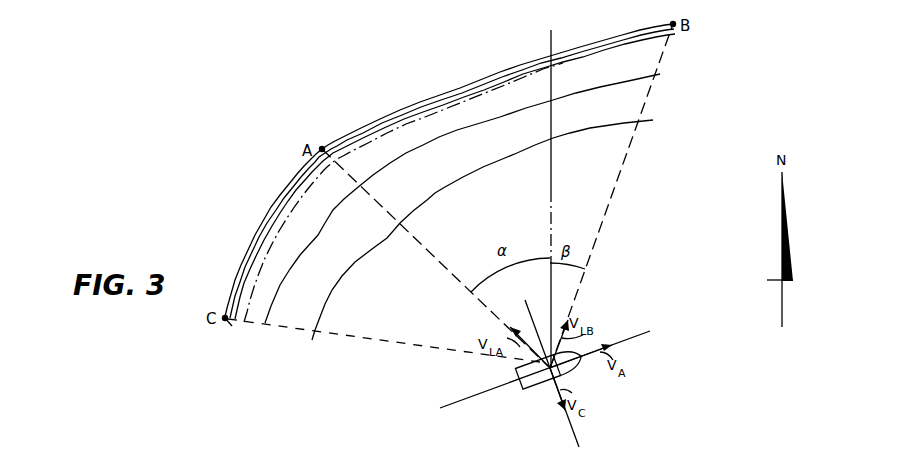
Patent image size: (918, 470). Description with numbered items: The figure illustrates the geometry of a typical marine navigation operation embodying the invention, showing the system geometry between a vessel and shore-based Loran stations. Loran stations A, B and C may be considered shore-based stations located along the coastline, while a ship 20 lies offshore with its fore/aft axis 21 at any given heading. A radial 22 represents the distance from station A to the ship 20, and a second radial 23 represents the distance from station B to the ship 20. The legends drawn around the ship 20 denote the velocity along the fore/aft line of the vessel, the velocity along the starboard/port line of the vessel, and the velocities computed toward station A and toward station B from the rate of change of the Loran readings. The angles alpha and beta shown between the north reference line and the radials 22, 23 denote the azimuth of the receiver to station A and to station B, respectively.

The ship 20 is at (573, 378).
The fore/aft axis 21 is at (634, 337).
The radial 22 is at (443, 262).
The radial 23 is at (616, 187).